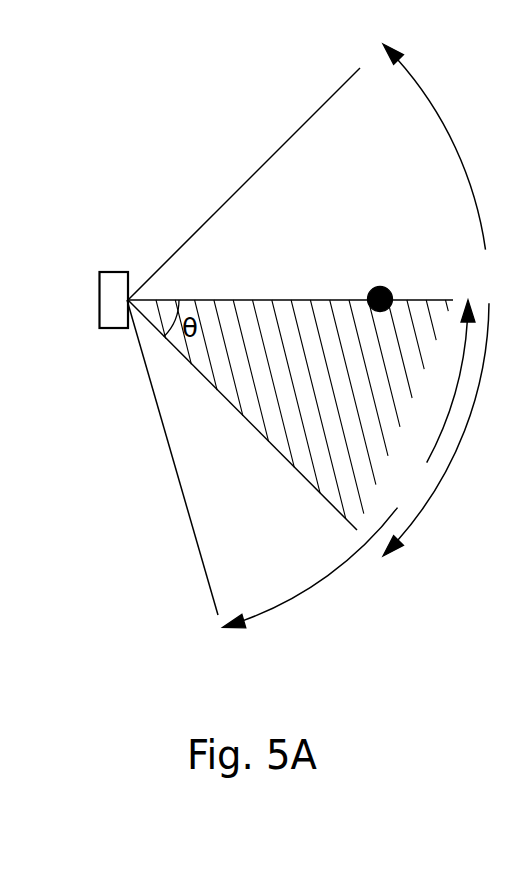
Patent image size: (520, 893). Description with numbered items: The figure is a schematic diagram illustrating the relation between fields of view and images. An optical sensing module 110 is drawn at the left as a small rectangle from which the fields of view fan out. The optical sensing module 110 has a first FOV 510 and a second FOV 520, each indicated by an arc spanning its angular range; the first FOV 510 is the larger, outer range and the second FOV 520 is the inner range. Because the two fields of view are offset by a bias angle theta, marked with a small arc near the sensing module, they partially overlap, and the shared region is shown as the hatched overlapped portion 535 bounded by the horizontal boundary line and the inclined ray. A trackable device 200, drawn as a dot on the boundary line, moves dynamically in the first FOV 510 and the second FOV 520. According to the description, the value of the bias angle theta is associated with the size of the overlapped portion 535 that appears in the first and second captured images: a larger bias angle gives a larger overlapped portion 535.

The optical sensing module 110 is at (113, 272).
The trackable device 200 is at (379, 287).
The first FOV 510 is at (447, 300).
The second FOV 520 is at (349, 464).
The overlapped portion 535 is at (322, 393).